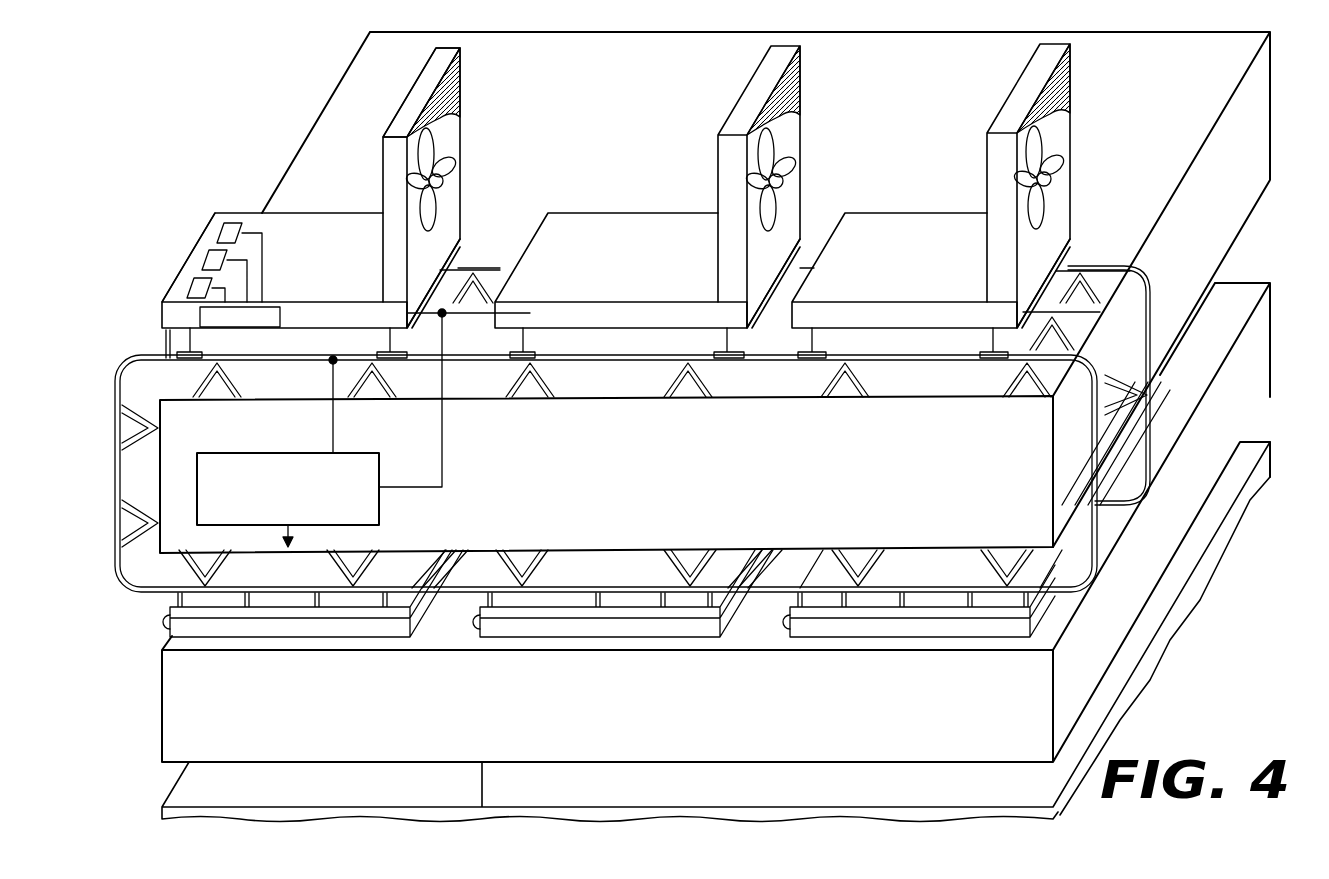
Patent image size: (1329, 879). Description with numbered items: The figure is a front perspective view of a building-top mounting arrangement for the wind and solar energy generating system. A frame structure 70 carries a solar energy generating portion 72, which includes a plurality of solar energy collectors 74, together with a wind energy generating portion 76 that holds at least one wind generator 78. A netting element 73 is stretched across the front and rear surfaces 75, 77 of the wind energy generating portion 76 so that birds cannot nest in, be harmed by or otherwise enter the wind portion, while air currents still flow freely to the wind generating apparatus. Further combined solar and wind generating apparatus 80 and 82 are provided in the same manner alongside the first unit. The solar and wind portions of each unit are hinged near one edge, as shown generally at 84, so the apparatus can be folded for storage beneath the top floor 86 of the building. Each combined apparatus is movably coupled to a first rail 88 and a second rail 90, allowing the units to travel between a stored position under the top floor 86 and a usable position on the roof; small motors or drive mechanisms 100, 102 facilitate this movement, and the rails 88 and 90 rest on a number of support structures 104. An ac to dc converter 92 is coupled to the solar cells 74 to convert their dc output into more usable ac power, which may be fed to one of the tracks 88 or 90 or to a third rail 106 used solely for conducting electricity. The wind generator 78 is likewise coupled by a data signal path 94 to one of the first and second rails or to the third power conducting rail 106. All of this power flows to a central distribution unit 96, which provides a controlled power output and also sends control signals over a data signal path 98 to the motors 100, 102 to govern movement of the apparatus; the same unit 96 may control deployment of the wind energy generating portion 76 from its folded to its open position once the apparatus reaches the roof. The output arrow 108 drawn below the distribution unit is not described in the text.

The frame structure 70 is at (312, 204).
The solar energy generating portion 72 is at (215, 216).
The netting element 73 is at (460, 72).
The solar energy collectors 74 is at (190, 288).
The front surface 75 is at (423, 70).
The wind energy generating portion 76 is at (400, 100).
The rear surface 77 is at (450, 135).
The wind generator 78 is at (446, 182).
The combined solar and wind generating apparatus 80 is at (667, 150).
The combined solar and wind generating apparatus 82 is at (968, 150).
The hinge 84 is at (165, 623).
The top floor 86 is at (150, 410).
The first rail 88 is at (165, 340).
The second rail 90 is at (130, 360).
The ac to dc converter 92 is at (200, 316).
The data signal path 94 is at (444, 433).
The central distribution unit 96 is at (380, 463).
The data signal path 98 is at (332, 418).
The motor 100 is at (202, 356).
The motor 102 is at (352, 348).
The support structures 104 is at (700, 381).
The third rail 106 is at (445, 318).
The output line 108 is at (296, 539).